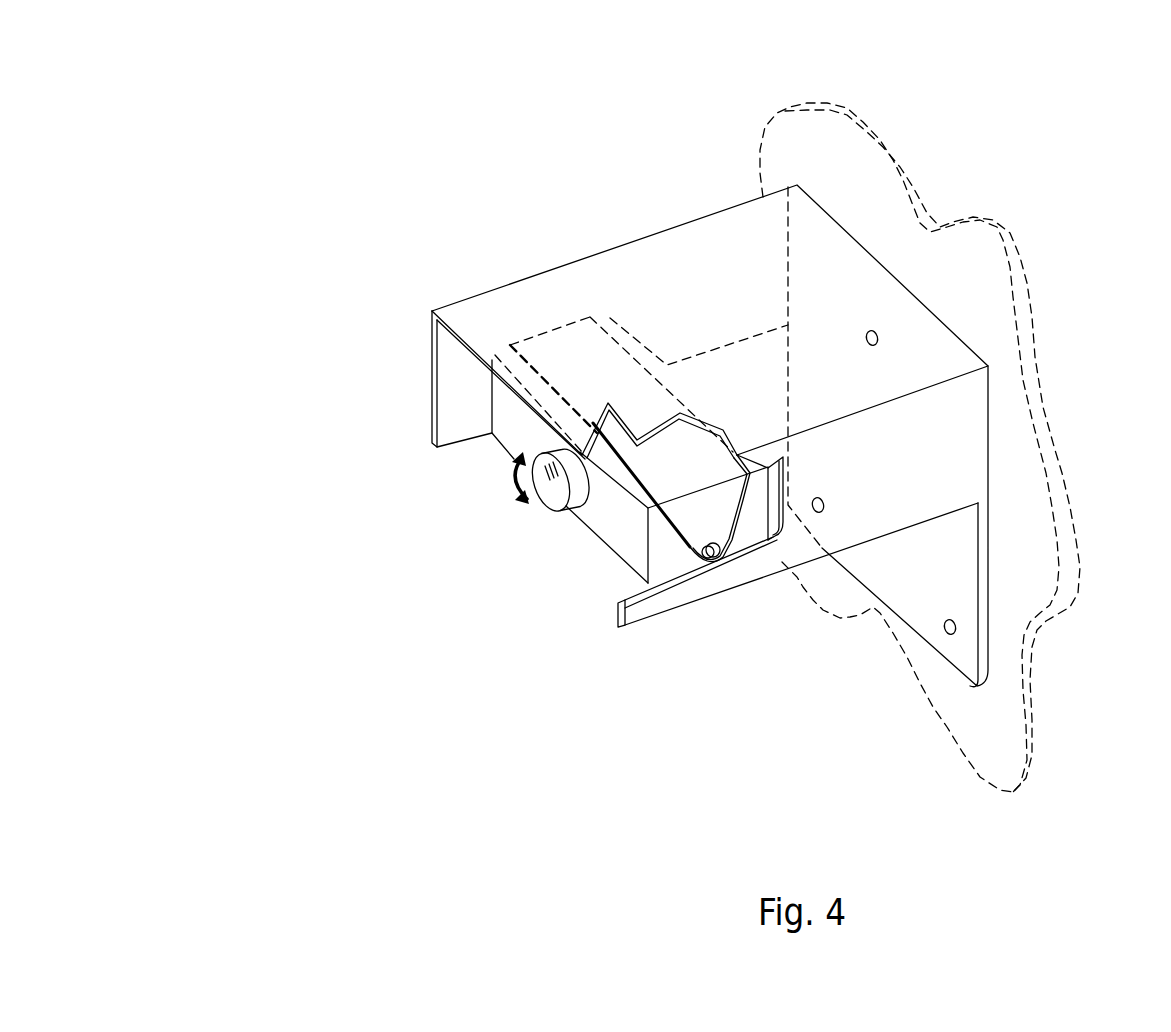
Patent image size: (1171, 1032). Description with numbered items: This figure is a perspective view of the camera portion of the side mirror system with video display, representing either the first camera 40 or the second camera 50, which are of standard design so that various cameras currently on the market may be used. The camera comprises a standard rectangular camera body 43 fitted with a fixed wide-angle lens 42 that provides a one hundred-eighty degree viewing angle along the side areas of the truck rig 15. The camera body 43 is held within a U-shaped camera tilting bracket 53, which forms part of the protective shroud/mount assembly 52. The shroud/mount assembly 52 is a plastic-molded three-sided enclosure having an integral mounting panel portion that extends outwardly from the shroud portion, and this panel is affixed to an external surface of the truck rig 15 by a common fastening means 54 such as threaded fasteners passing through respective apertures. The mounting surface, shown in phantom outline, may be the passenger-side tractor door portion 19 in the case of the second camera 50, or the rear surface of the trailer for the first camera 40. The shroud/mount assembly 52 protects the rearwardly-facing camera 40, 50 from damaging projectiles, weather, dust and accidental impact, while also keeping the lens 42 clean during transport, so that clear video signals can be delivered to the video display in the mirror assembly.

The first camera 40 is at (672, 389).
The second camera 50 is at (672, 389).
The shroud/mount assembly 52 is at (652, 262).
The fastening means 54 is at (825, 505).
The fixed wide-angle lens 42 is at (555, 500).
The camera body 43 is at (610, 550).
The camera tilting bracket 53 is at (723, 530).
The truck rig 15 is at (965, 447).
The passenger-side tractor door portion 19 is at (990, 324).